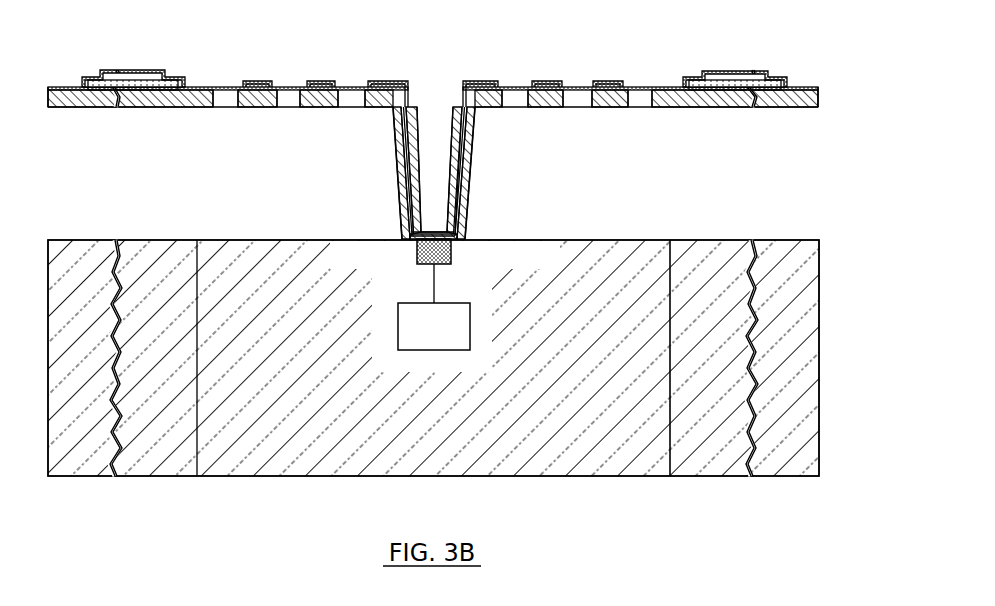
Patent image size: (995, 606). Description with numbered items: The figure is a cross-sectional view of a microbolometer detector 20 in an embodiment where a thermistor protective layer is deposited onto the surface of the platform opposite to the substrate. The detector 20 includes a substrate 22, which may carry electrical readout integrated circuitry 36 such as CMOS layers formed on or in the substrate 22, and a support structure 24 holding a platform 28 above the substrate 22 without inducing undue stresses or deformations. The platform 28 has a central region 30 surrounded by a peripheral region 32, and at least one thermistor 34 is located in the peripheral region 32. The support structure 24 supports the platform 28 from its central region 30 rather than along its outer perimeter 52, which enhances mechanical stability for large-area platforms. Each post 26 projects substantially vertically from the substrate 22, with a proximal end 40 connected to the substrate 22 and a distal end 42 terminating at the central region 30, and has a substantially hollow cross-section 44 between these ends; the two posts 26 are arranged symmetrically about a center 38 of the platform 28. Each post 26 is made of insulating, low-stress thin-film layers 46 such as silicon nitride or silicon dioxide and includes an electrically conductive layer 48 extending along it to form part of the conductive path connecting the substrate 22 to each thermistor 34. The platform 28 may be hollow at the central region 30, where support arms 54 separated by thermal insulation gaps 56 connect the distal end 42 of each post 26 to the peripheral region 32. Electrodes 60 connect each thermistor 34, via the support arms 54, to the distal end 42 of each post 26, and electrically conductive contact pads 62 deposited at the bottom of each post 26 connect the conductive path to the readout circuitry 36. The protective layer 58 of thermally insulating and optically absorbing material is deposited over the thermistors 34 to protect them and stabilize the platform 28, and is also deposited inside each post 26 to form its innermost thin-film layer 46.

The microbolometer detector 20 is at (758, 16).
The substrate 22 is at (597, 443).
The support structure 24 is at (362, 176).
The post 26 is at (474, 188).
The platform 28 is at (63, 87).
The central region 30 is at (367, 51).
The peripheral region 32 is at (121, 57).
The thermistor 34 is at (142, 78).
The electrical readout integrated circuitry 36 is at (423, 337).
The center 38 is at (432, 85).
The proximal end 40 is at (456, 244).
The distal end 42 is at (463, 85).
The hollow cross-section 44 is at (422, 151).
The thin-film layer 46 is at (402, 203).
The electrically conductive layer 48 is at (467, 152).
The outer perimeter 52 is at (817, 95).
The support arm 54 is at (258, 109).
The thermal insulation gap 56 is at (289, 109).
The protective layer 58 is at (206, 86).
The electrode 60 is at (711, 66).
The electrically conductive contact pad 62 is at (432, 244).